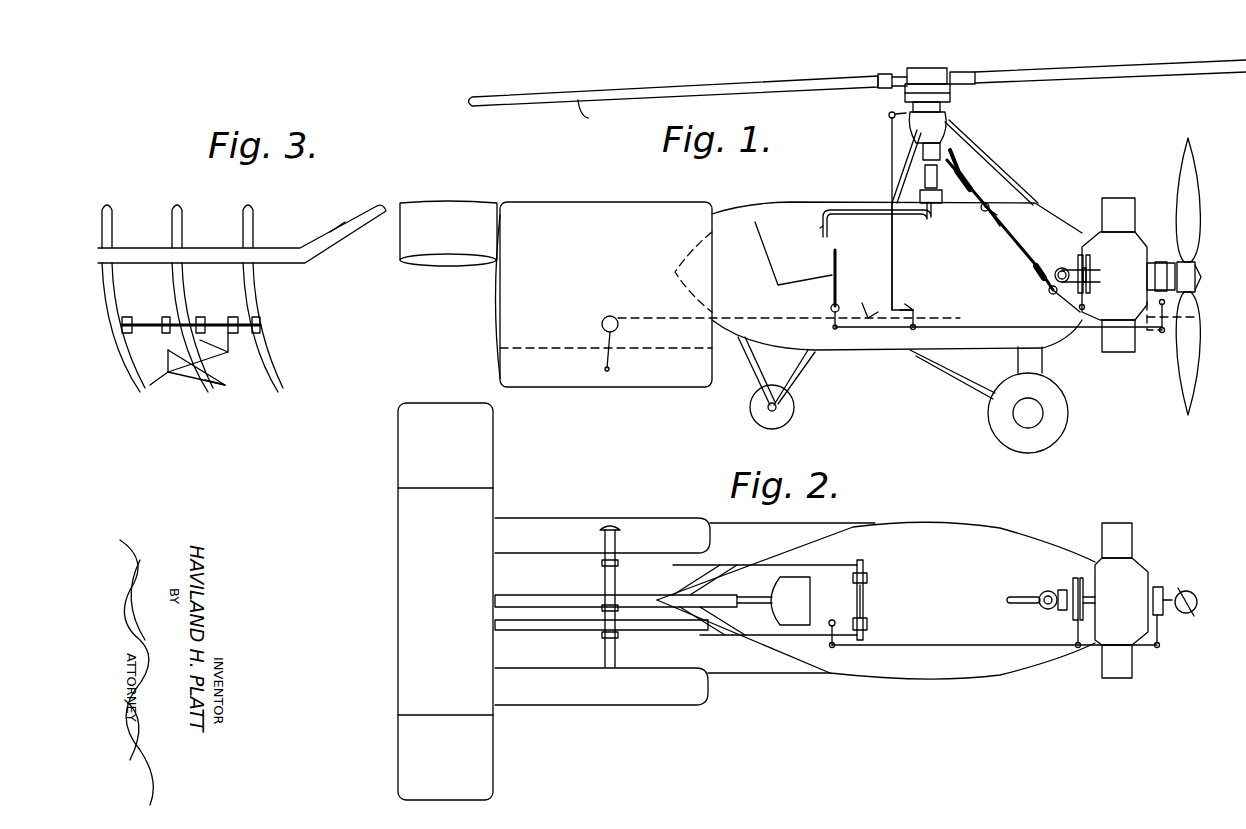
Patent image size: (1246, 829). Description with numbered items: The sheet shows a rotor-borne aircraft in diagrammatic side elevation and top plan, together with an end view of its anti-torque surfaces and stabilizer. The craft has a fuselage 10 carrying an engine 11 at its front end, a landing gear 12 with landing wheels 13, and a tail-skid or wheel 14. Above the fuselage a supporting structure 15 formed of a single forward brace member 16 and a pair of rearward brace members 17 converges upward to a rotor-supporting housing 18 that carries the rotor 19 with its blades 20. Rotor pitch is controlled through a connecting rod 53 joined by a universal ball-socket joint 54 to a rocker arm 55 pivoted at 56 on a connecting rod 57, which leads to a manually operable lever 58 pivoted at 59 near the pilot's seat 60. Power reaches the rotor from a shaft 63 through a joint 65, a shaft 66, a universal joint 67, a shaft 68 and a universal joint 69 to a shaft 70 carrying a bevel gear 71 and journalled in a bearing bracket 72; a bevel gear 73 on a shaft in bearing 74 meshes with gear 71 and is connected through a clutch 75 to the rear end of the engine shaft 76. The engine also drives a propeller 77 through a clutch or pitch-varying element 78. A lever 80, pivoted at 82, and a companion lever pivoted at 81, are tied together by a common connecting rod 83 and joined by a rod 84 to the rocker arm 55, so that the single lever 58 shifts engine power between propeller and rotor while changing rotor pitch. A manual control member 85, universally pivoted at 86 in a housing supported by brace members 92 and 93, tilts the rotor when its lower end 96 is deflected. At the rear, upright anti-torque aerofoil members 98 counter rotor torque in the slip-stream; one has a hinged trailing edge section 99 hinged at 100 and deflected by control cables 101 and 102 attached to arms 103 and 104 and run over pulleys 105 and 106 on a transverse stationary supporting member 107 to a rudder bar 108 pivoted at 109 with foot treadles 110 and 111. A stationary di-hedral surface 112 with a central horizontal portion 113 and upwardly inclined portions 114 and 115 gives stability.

In FIG. 1, the fuselage 10 is at (855, 338).
In FIG. 1, the engine 11 is at (1120, 332).
In FIG. 1, the landing gear 12 is at (1027, 364).
In FIG. 1, the landing wheels 13 is at (1040, 438).
In FIG. 1, the tail-skid or wheel 14 is at (752, 406).
In FIG. 1, the supporting structure 15 is at (996, 162).
In FIG. 1, the forward brace member 16 is at (978, 193).
In FIG. 1, the rearward brace members 17 is at (896, 195).
In FIG. 1, the rotor-supporting housing 18 is at (940, 127).
In FIG. 1, the rotor 19 is at (858, 79).
In FIG. 1, the blades 20 is at (591, 117).
In FIG. 1, the connecting link or rod 53 is at (892, 262).
In FIG. 1, the universal ball-socket joint 54 is at (888, 115).
In FIG. 1, the rocker arm 55 is at (925, 300).
In FIG. 1, the pivotal support 56 is at (896, 321).
In FIG. 1, the connecting rod or link 57 is at (905, 328).
In FIG. 1, the manually operable lever 58 is at (833, 304).
In FIG. 1, the pivotal support 59 is at (830, 308).
In FIG. 2, the pivotal support 59 is at (830, 622).
In FIG. 1, the pilot's seat 60 is at (793, 253).
In FIG. 2, the pilot's seat 60 is at (790, 601).
In FIG. 1, the shaft 63 is at (953, 166).
In FIG. 1, the joint 65 is at (971, 182).
In FIG. 1, the shaft 66 is at (983, 210).
In FIG. 1, the universal joint 67 is at (993, 229).
In FIG. 1, the shaft 68 is at (1020, 246).
In FIG. 1, the universal joint 69 is at (1046, 264).
In FIG. 1, the shaft 70 is at (1049, 290).
In FIG. 1, the bevel gear 71 is at (1058, 282).
In FIG. 1, the bearing bracket 72 is at (1075, 310).
In FIG. 1, the bevel gear 73 is at (1066, 262).
In FIG. 1, the bearing 74 is at (1080, 254).
In FIG. 1, the clutch 75 is at (1091, 262).
In FIG. 1, the engine shaft 76 is at (1091, 278).
In FIG. 1, the propeller 77 is at (1196, 252).
In FIG. 1, the clutch or pitch-varying element 78 is at (1160, 262).
In FIG. 1, the lever 80 is at (1183, 323).
In FIG. 1, the pivotal support 81 is at (1085, 307).
In FIG. 2, the pivotal support 81 is at (1077, 642).
In FIG. 1, the pivotal support 82 is at (1165, 302).
In FIG. 2, the pivotal support 82 is at (1160, 632).
In FIG. 1, the common connecting rod 83 is at (1160, 332).
In FIG. 1, the rod 84 is at (962, 330).
In FIG. 1, the manual control member 85 is at (876, 220).
In FIG. 1, the universal pivot 86 is at (936, 204).
In FIG. 1, the brace member 92 is at (1004, 217).
In FIG. 1, the brace member 93 is at (920, 179).
In FIG. 1, the lower end of control member 96 is at (805, 228).
In FIG. 1, the anti-torque aerofoil members 98 is at (604, 294).
In FIG. 2, the anti-torque aerofoil members 98 is at (568, 524).
In FIG. 3, the anti-torque aerofoil members 98 is at (245, 220).
In FIG. 3, the hinged trailing edge section 99 is at (170, 372).
In FIG. 3, the hinge 100 is at (210, 308).
In FIG. 2, the control cable 101 is at (686, 568).
In FIG. 3, the control cable 101 is at (160, 380).
In FIG. 2, the control cable 102 is at (715, 642).
In FIG. 3, the control cable 102 is at (230, 348).
In FIG. 3, the bracing or arm 103 is at (166, 360).
In FIG. 3, the bracing or arm 104 is at (232, 378).
In FIG. 2, the pulley or sheave 105 is at (603, 563).
In FIG. 3, the pulley or sheave 105 is at (166, 317).
In FIG. 2, the pulley or sheave 106 is at (602, 636).
In FIG. 3, the pulley or sheave 106 is at (233, 317).
In FIG. 3, the transverse stationary supporting member 107 is at (140, 312).
In FIG. 1, the rudder bar 108 is at (866, 312).
In FIG. 2, the rudder bar 108 is at (866, 598).
In FIG. 2, the pivot 109 is at (864, 602).
In FIG. 2, the foot treadle 110 is at (868, 577).
In FIG. 2, the foot treadle 111 is at (868, 627).
In FIG. 2, the di-hedral surface 112 is at (421, 601).
In FIG. 2, the central horizontal portion 113 is at (596, 612).
In FIG. 3, the central horizontal portion 113 is at (273, 263).
In FIG. 2, the laterally extending upwardly inclined portion 114 is at (445, 742).
In FIG. 3, the laterally extending upwardly inclined portion 114 is at (338, 235).
In FIG. 2, the laterally extending upwardly inclined portion 115 is at (445, 466).